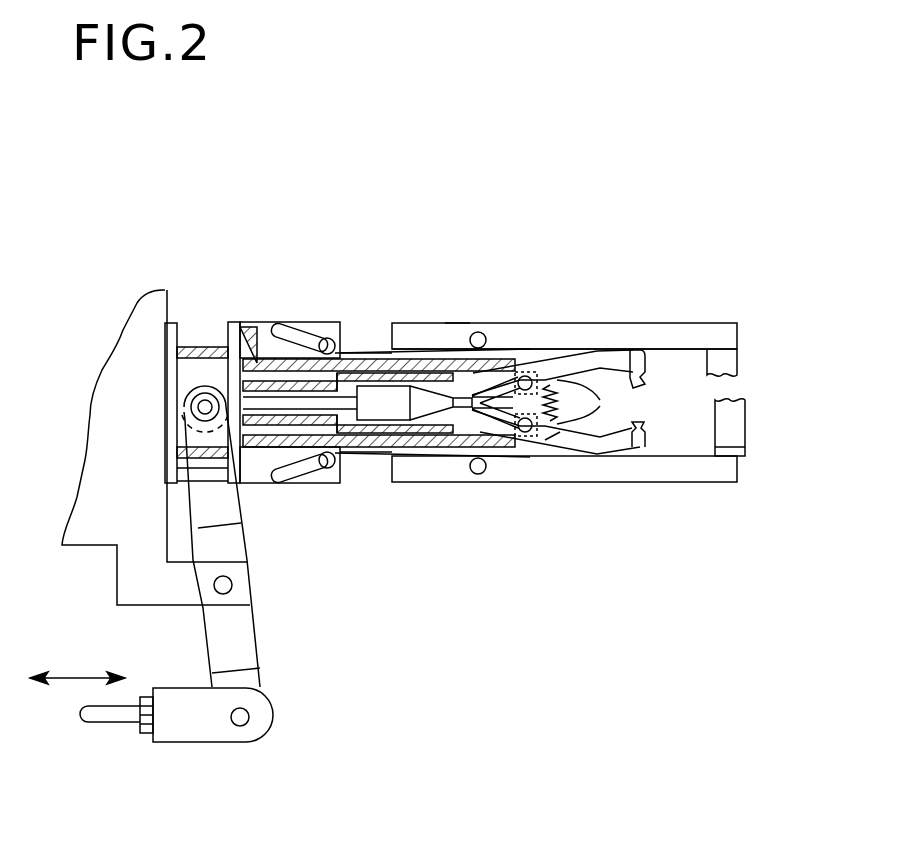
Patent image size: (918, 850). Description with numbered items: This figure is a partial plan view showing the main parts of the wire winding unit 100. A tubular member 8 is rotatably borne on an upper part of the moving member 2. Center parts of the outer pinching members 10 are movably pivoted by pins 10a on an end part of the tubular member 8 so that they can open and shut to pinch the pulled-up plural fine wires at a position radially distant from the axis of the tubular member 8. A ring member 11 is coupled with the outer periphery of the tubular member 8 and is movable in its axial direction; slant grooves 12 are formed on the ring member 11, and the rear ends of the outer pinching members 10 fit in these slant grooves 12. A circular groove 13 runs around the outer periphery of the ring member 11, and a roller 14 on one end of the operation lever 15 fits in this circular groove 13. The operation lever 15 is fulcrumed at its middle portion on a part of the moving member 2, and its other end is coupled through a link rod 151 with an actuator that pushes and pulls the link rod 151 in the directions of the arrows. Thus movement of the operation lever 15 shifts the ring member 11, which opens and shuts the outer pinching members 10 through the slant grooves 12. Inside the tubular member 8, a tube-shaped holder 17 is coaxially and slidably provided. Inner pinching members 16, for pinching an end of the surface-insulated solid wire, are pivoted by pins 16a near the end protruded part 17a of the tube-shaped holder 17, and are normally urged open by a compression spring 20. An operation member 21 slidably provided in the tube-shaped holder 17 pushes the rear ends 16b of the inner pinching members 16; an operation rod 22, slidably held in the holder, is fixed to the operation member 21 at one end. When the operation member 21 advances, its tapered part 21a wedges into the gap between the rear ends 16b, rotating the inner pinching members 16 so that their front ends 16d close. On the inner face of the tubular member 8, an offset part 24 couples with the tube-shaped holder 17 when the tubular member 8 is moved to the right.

The moving member 2 is at (108, 528).
The tubular member 8 is at (457, 335).
The outer pinching members 10 is at (740, 338).
The pins 10a is at (480, 332).
The ring member 11 is at (250, 330).
The slant grooves 12 is at (303, 332).
The circular groove 13 is at (200, 325).
The roller 14 is at (170, 452).
The operation lever 15 is at (250, 636).
The link rod 151 is at (115, 716).
The inner pinching members 16 is at (628, 354).
The pins 16a is at (532, 377).
The rear ends 16b is at (510, 358).
The front ends 16d is at (650, 378).
The tube-shaped holder 17 is at (375, 482).
The end protruded part 17a is at (550, 442).
The compression spring 20 is at (575, 440).
The operation member 21 is at (395, 386).
The tapered part 21a is at (440, 482).
The operation rod 22 is at (345, 372).
The offset part 24 is at (342, 482).
The wire winding unit 100 is at (535, 322).